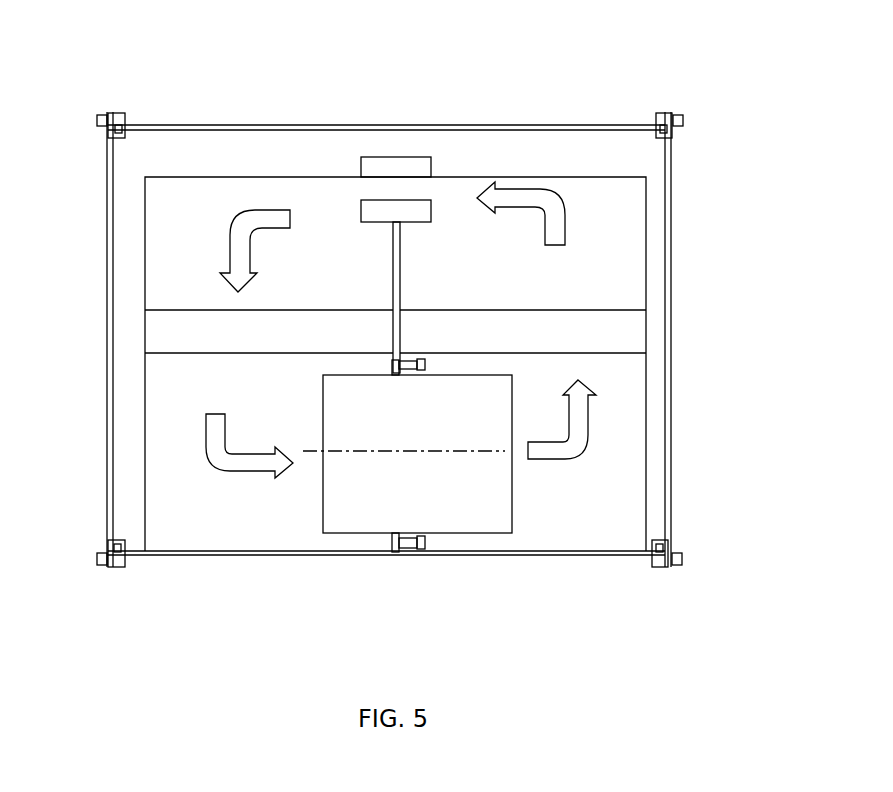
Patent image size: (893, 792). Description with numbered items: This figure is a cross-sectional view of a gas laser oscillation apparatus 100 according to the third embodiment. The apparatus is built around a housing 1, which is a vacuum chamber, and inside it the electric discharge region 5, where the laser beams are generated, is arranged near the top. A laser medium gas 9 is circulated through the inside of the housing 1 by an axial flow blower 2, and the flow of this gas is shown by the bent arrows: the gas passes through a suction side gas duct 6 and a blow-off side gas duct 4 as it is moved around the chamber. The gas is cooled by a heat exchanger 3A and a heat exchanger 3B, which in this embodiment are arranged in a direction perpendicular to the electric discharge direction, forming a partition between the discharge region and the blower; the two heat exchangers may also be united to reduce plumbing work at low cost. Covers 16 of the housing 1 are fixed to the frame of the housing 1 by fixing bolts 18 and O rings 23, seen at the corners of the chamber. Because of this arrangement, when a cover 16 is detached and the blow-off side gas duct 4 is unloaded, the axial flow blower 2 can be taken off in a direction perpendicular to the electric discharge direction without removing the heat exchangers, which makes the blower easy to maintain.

The gas laser oscillation apparatus 100 is at (750, 57).
The housing 1 is at (528, 125).
The axial flow blower 2 is at (512, 577).
The heat exchanger 3A is at (512, 310).
The heat exchanger 3B is at (302, 310).
The blow-off side gas duct 4 is at (232, 554).
The electric discharge region 5 is at (431, 165).
The suction side gas duct 6 is at (202, 177).
The laser medium gas 9 is at (562, 207).
The cover 16 is at (108, 262).
The fixing bolt 18 is at (96, 558).
The O ring 23 is at (120, 548).